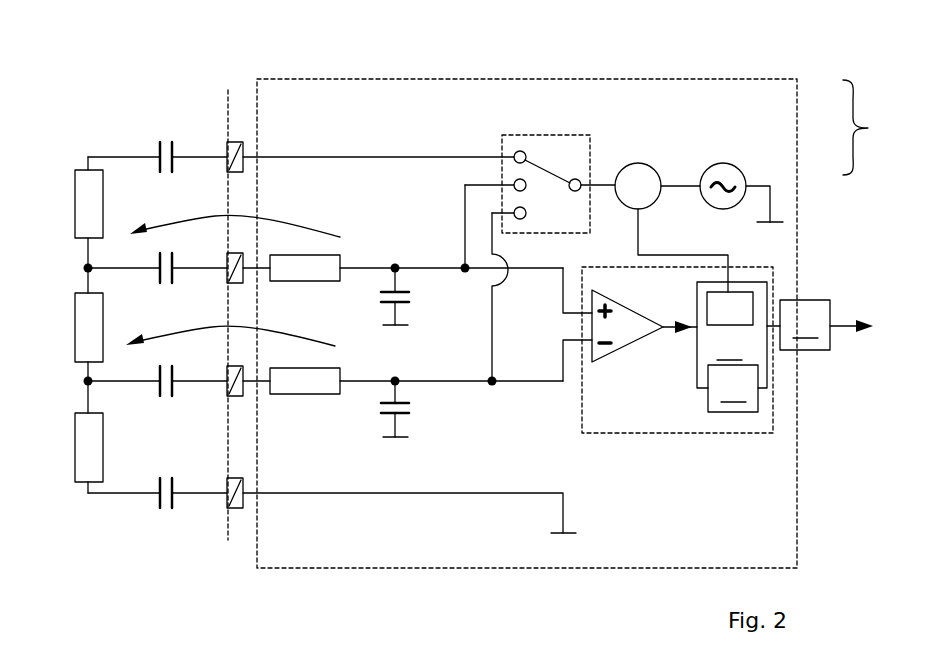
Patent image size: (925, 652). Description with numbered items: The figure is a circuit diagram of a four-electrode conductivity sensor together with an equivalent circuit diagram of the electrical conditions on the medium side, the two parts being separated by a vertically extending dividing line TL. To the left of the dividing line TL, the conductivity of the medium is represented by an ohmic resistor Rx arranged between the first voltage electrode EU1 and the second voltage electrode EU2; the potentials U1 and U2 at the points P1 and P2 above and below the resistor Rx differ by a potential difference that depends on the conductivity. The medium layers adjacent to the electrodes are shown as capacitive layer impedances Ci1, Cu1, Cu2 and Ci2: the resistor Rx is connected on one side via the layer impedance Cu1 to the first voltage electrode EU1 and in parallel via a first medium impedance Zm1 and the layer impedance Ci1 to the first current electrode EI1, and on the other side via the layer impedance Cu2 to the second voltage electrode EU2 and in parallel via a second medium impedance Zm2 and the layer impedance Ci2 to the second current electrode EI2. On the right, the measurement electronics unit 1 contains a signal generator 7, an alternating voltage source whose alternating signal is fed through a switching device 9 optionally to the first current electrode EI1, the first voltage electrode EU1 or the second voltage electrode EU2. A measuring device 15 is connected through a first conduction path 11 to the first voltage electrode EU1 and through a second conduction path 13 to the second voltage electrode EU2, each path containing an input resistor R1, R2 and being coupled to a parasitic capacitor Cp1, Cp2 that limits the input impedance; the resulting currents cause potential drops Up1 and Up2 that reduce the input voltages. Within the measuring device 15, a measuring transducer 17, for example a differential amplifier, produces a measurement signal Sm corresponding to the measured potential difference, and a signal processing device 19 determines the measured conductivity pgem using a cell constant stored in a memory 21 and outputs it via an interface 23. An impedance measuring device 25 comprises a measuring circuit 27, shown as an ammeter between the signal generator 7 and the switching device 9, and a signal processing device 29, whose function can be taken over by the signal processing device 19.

The measurement electronics unit 1 is at (525, 80).
The signal generator 7 is at (742, 168).
The switching device 9 is at (553, 135).
The first conduction path 11 is at (363, 267).
The second conduction path 13 is at (370, 378).
The measuring device 15 is at (716, 313).
The measuring transducer 17 is at (613, 348).
The signal processing device 19 is at (732, 335).
The memory 21 is at (733, 388).
The interface 23 is at (805, 325).
The impedance measuring device 25 is at (876, 127).
The measuring circuit 27 is at (647, 167).
The signal processing device 29 is at (745, 305).
The dividing line TL is at (228, 90).
The first medium impedance Zm1 is at (88, 202).
The second medium impedance Zm2 is at (88, 455).
The ohmic resistor Rx is at (90, 333).
The first point P1 is at (92, 271).
The second point P2 is at (92, 384).
The potential at first point U1 is at (52, 269).
The potential at second point U2 is at (52, 383).
The first current electrode EI1 is at (232, 150).
The second current electrode EI2 is at (233, 490).
The first voltage electrode EU1 is at (232, 265).
The second voltage electrode EU2 is at (233, 378).
The layer impedance Ci1 is at (177, 165).
The layer impedance Ci2 is at (177, 502).
The layer impedance Cu1 is at (177, 270).
The layer impedance Cu2 is at (177, 390).
The input resistor R1 is at (305, 269).
The input resistor R2 is at (305, 382).
The parasitic capacitor Cp1 is at (422, 296).
The parasitic capacitor Cp2 is at (420, 409).
The potential drop Up1 is at (255, 219).
The potential drop Up2 is at (287, 331).
The measurement signal Sm is at (670, 320).
The measured conductivity pgem is at (850, 322).